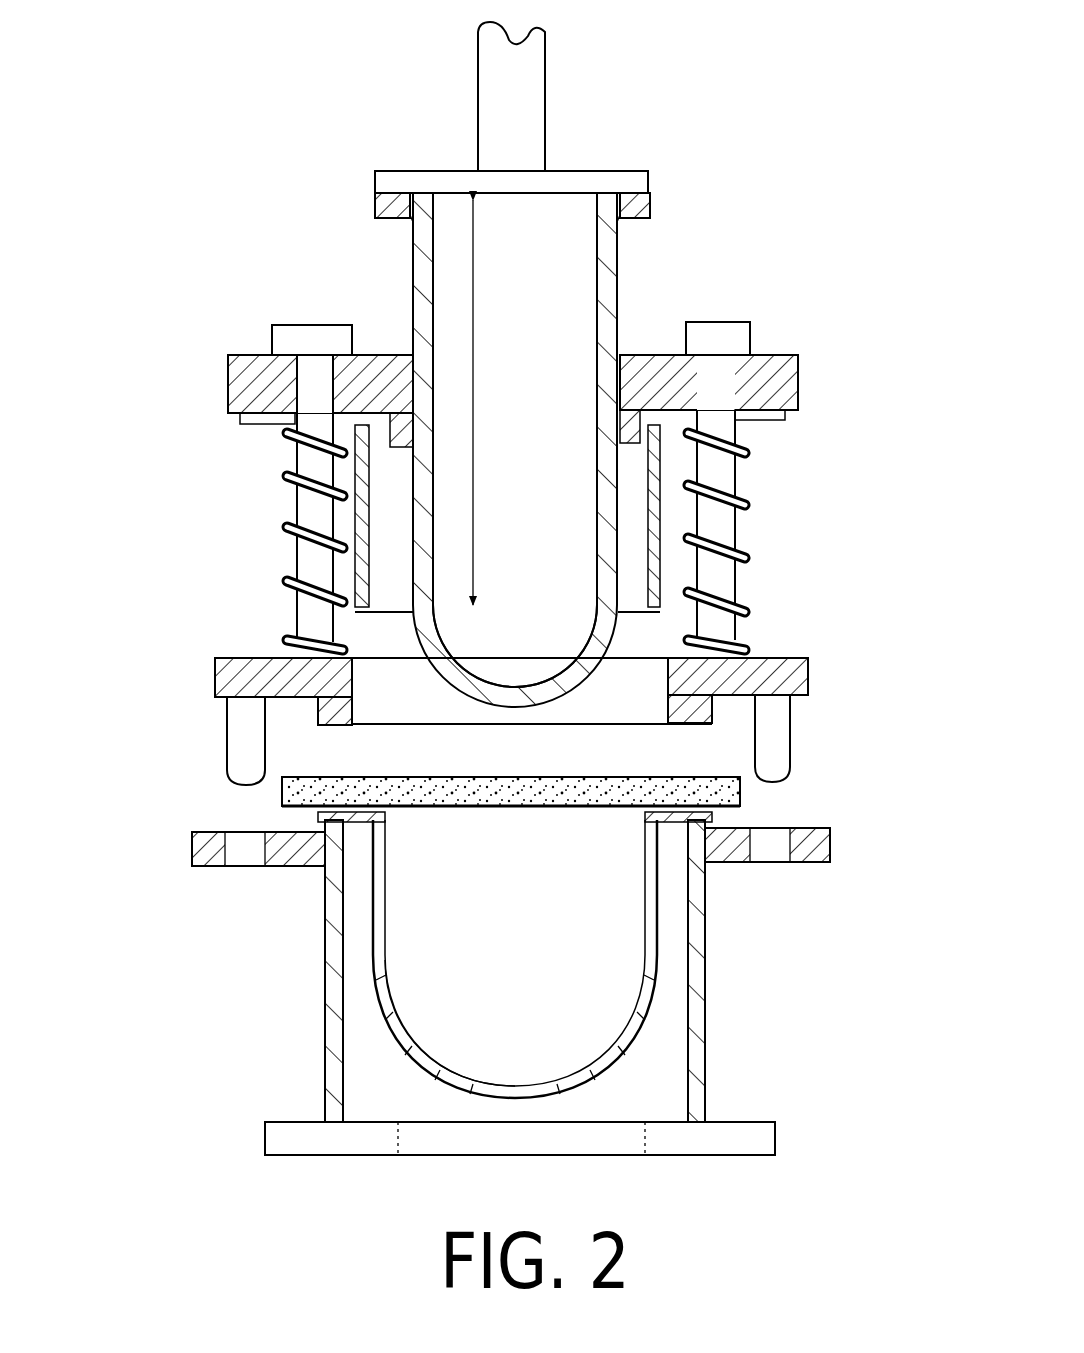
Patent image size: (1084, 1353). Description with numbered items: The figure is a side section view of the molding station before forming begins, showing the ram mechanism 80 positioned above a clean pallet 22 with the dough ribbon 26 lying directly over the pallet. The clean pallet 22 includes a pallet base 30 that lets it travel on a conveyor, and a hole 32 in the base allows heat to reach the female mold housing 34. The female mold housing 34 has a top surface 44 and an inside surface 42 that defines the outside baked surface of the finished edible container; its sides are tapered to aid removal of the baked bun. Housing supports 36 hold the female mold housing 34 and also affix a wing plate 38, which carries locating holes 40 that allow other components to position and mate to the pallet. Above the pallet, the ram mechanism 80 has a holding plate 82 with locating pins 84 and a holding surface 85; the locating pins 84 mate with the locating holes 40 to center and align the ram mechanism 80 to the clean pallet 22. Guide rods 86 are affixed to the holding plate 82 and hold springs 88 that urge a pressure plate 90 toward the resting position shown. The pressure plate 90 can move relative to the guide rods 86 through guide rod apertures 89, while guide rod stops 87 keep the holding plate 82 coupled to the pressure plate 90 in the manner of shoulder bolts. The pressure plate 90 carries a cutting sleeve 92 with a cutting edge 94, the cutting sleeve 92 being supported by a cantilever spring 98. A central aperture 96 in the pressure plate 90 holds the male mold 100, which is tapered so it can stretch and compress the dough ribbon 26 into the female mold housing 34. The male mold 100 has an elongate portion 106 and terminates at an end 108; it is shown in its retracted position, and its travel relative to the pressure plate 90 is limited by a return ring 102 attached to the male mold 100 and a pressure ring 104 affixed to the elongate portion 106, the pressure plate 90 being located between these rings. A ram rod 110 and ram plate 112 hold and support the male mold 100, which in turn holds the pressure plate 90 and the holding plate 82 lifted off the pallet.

The clean pallet 22 is at (215, 969).
The dough ribbon 26 is at (745, 800).
The pallet base 30 is at (768, 1140).
The hole 32 is at (560, 1140).
The female mold housing 34 is at (368, 965).
The housing supports 36 is at (335, 943).
The wing plate 38 is at (192, 842).
The locating holes 40 is at (775, 850).
The inside surface 42 is at (425, 1007).
The top surface 44 is at (698, 792).
The ram mechanism 80 is at (235, 478).
The holding plate 82 is at (225, 688).
The locating pins 84 is at (245, 733).
The holding surface 85 is at (690, 762).
The guide rods 86 is at (303, 618).
The guide rod stops 87 is at (275, 352).
The springs 88 is at (293, 528).
The guide rod apertures 89 is at (245, 416).
The pressure plate 90 is at (240, 390).
The cutting sleeve 92 is at (738, 508).
The cutting edge 94 is at (705, 615).
The central aperture 96 is at (600, 378).
The cantilever spring 98 is at (658, 422).
The male mold 100 is at (385, 290).
The return ring 102 is at (602, 420).
The pressure ring 104 is at (650, 205).
The elongate portion 106 is at (469, 402).
The end 108 is at (445, 690).
The ram rod 110 is at (525, 100).
The ram plate 112 is at (583, 177).